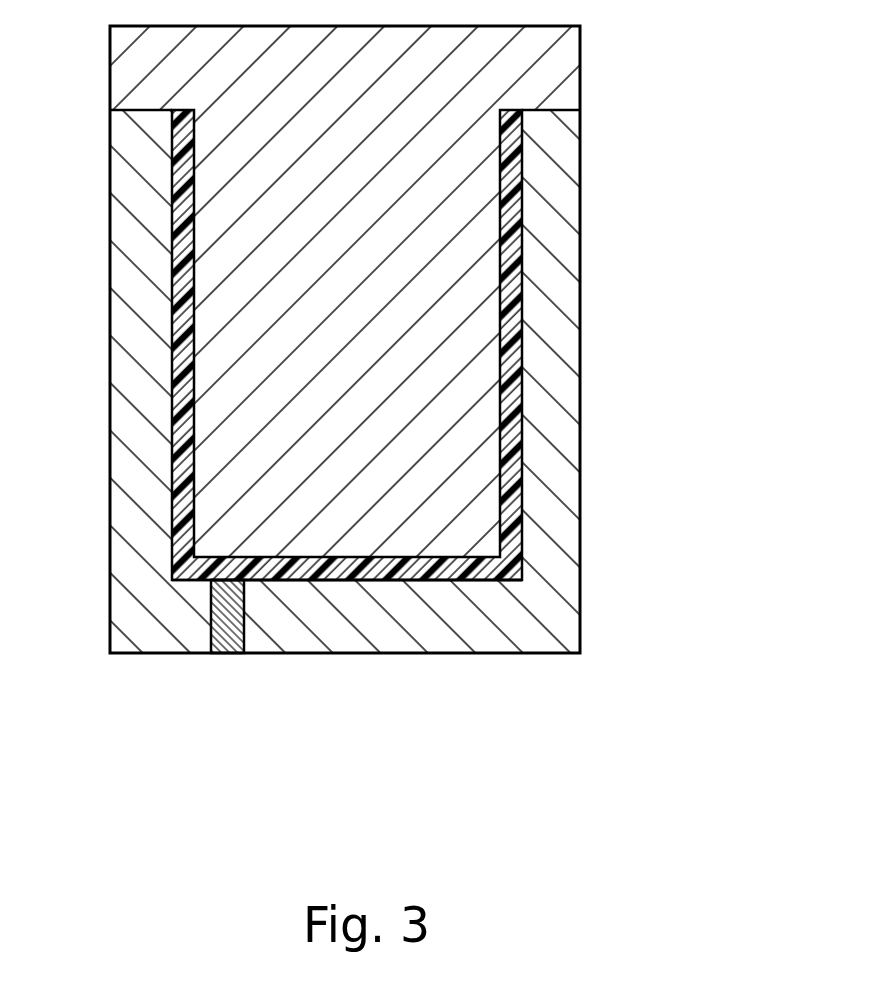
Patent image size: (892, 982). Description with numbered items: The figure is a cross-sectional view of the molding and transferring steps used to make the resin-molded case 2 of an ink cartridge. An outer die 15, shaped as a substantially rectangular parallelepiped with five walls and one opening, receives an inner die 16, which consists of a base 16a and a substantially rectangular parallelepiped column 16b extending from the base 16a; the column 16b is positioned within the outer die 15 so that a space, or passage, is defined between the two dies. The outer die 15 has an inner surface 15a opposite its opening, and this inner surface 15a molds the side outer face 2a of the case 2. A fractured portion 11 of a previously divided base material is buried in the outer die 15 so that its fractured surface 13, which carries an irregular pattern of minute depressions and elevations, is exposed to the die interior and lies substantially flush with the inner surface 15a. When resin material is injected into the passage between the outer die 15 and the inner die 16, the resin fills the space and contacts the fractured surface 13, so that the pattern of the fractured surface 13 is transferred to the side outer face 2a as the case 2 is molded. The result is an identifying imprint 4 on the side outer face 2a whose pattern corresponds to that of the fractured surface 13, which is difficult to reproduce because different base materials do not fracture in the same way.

The case 2 is at (190, 365).
The side outer face 2a is at (393, 580).
The identifying imprint 4 is at (210, 608).
The fractured portion 11 is at (232, 632).
The fractured surface 13 is at (263, 580).
The outer die 15 is at (553, 330).
The inner surface 15a is at (467, 565).
The inner die 16 is at (477, 291).
The base 16a is at (410, 262).
The column 16b is at (520, 58).